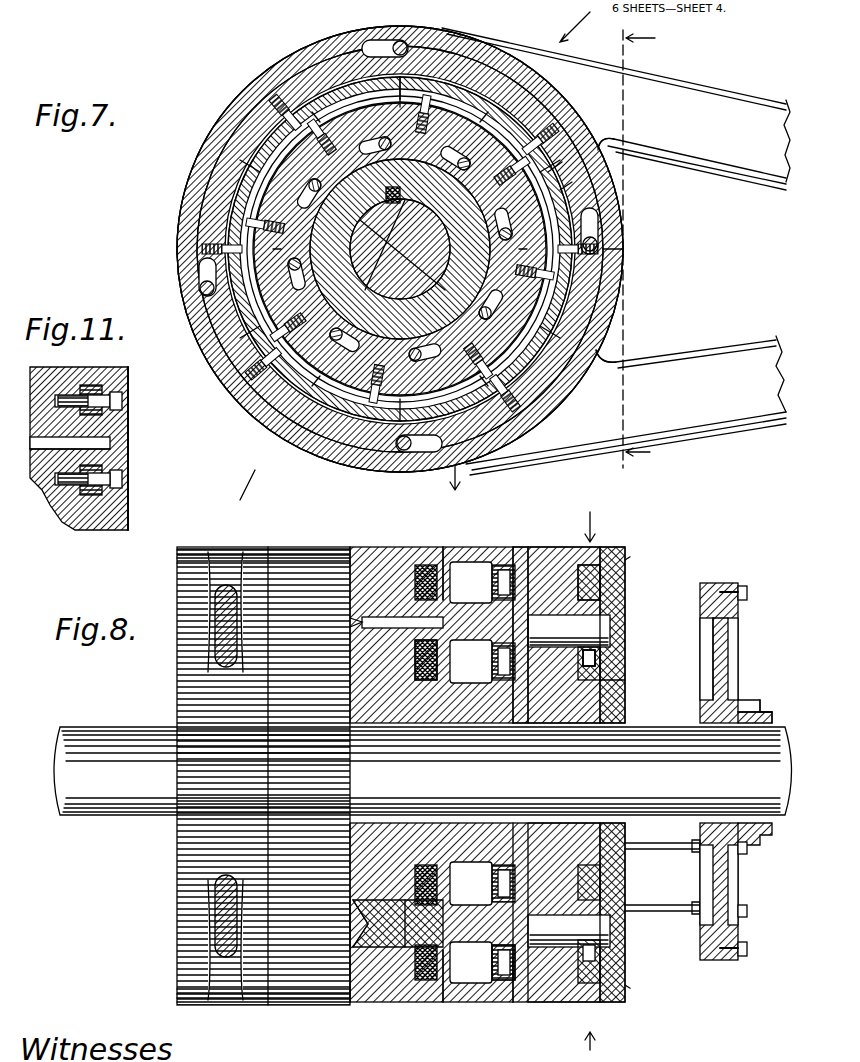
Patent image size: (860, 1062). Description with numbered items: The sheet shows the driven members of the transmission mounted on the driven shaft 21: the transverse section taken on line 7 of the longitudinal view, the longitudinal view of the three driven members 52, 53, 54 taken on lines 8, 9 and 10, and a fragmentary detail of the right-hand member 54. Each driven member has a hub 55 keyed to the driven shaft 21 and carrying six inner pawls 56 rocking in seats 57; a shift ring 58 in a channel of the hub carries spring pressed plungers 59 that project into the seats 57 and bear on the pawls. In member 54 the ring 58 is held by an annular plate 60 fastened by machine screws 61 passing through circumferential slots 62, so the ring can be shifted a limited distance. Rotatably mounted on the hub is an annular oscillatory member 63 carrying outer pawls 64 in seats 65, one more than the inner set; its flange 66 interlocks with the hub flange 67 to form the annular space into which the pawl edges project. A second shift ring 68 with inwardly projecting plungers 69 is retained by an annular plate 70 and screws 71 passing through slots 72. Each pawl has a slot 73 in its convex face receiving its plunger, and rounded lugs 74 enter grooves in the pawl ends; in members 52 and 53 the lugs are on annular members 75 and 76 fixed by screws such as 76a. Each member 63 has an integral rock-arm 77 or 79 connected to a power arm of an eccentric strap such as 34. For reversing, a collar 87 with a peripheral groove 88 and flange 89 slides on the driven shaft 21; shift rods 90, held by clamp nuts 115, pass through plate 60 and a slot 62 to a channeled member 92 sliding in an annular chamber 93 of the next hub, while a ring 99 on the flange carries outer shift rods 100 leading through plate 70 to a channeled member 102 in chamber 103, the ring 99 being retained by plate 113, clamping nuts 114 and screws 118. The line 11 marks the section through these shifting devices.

In FIG. 8, the section line 7— 7 is at (588, 778).
In FIG. 7, the section line 8— 8 is at (451, 489).
In FIG. 7, the section line 9— 9 is at (230, 72).
In FIG. 7, the section line 10— 10 is at (648, 251).
In FIG. 7, the section line 11— 11 is at (420, 250).
In FIG. 7, the driven shaft 21 is at (365, 230).
In FIG. 8, the driven shaft 21 is at (423, 771).
In FIG. 7, the eccentric strap 34 is at (306, 37).
In FIG. 8, the driven member 52 is at (300, 1004).
In FIG. 8, the driven member 53 is at (440, 1000).
In FIG. 8, the driven member 54 is at (530, 1000).
In FIG. 7, the hub 55 is at (240, 130).
In FIG. 11, the hub 55 is at (60, 470).
In FIG. 8, the hub 55 is at (495, 723).
In FIG. 7, the inner pawls 56 is at (560, 128).
In FIG. 8, the inner pawls 56 is at (540, 612).
In FIG. 7, the pawl seats 57 is at (560, 180).
In FIG. 8, the pawl seats 57 is at (565, 612).
In FIG. 7, the shift ring 58 is at (225, 300).
In FIG. 11, the shift ring 58 is at (95, 497).
In FIG. 8, the shift ring 58 is at (425, 565).
In FIG. 7, the spring pressed plungers 59 is at (405, 452).
In FIG. 8, the spring pressed plungers 59 is at (598, 652).
In FIG. 11, the annular plate 60 is at (126, 468).
In FIG. 8, the annular plate 60 is at (602, 640).
In FIG. 7, the machine screws 61 is at (345, 70).
In FIG. 11, the machine screws 61 is at (75, 490).
In FIG. 7, the slots 62 is at (378, 40).
In FIG. 7, the annular oscillatory member 63 is at (210, 150).
In FIG. 11, the annular oscillatory member 63 is at (55, 380).
In FIG. 8, the annular oscillatory member 63 is at (203, 560).
In FIG. 7, the outer pawls 64 is at (600, 196).
In FIG. 8, the outer pawls 64 is at (358, 960).
In FIG. 7, the pawl seats 65 is at (585, 210).
In FIG. 8, the pawl seats 65 is at (500, 985).
In FIG. 8, the annular flange 66 is at (355, 622).
In FIG. 8, the annular flange 67 is at (352, 632).
In FIG. 7, the shift ring 68 is at (565, 266).
In FIG. 11, the shift ring 68 is at (88, 388).
In FIG. 8, the shift ring 68 is at (430, 565).
In FIG. 7, the spring pressed plungers 69 is at (548, 285).
In FIG. 8, the spring pressed plungers 69 is at (620, 955).
In FIG. 11, the annular plate 70 is at (130, 375).
In FIG. 8, the annular plate 70 is at (618, 596).
In FIG. 7, the machine screws 71 is at (625, 256).
In FIG. 11, the machine screws 71 is at (124, 405).
In FIG. 8, the machine screws 71 is at (640, 551).
In FIG. 7, the slots 72 is at (598, 236).
In FIG. 7, the slot 73 is at (300, 95).
In FIG. 8, the slot 73 is at (620, 612).
In FIG. 8, the lugs 74 is at (400, 900).
In FIG. 8, the annular member 75 is at (305, 548).
In FIG. 8, the annular member 76 is at (470, 628).
In FIG. 8, the machine screws 76a is at (425, 700).
In FIG. 8, the rock-arm 77 is at (218, 640).
In FIG. 7, the rock-arm 79 is at (728, 348).
In FIG. 8, the collar 87 is at (768, 710).
In FIG. 8, the peripheral groove 88 is at (752, 700).
In FIG. 8, the annular flange 89 is at (718, 676).
In FIG. 7, the shift rods 90 is at (548, 110).
In FIG. 8, the shift rods 90 is at (672, 850).
In FIG. 8, the annular channeled member 92 is at (490, 690).
In FIG. 8, the annular chamber 93 is at (482, 810).
In FIG. 8, the annular ring 99 is at (718, 583).
In FIG. 7, the shift rods 100 is at (575, 52).
In FIG. 8, the shift rods 100 is at (668, 905).
In FIG. 8, the annular channeled member 102 is at (470, 1004).
In FIG. 8, the annular chamber 103 is at (445, 546).
In FIG. 8, the annular plate 113 is at (740, 614).
In FIG. 8, the clamping nuts 114 is at (747, 848).
In FIG. 8, the clamp nuts 115 is at (747, 912).
In FIG. 8, the machine screws 118 is at (750, 589).